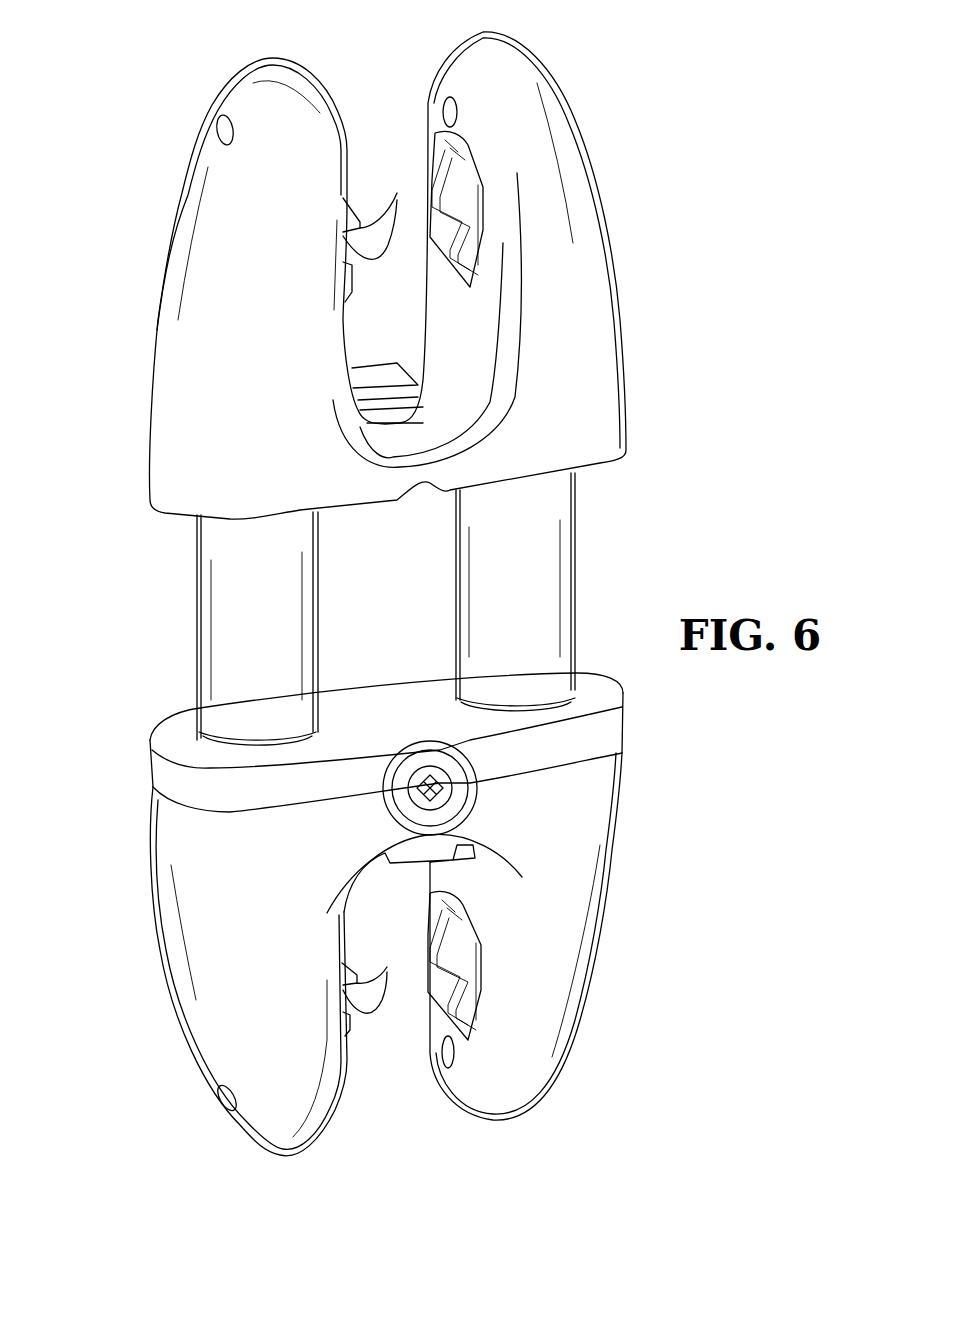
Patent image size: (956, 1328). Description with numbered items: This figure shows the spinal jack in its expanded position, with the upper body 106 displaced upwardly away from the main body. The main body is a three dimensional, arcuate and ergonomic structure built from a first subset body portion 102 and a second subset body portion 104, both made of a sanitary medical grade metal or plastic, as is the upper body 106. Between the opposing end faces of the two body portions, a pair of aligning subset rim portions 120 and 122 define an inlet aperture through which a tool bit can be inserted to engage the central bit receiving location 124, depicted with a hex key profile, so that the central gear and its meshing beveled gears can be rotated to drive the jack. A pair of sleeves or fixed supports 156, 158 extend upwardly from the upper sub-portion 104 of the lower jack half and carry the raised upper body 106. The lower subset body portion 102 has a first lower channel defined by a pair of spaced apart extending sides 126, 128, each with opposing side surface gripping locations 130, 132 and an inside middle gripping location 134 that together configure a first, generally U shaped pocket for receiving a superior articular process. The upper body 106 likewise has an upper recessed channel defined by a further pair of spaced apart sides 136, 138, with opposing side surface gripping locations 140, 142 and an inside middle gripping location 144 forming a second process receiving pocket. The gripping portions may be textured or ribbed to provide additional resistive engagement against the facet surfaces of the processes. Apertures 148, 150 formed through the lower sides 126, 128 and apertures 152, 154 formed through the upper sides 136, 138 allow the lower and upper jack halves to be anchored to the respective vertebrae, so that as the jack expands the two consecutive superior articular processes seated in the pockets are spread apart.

The first subset body portion 102 is at (183, 905).
The second subset body portion 104 is at (162, 775).
The upper body 106 is at (160, 440).
The subset rim portion 120 is at (452, 792).
The subset rim portion 122 is at (433, 787).
The central bit receiving location 124 is at (440, 787).
The extending side 126 is at (278, 1137).
The extending side 128 is at (537, 1087).
The side surface gripping location 130 is at (370, 1030).
The side surface gripping location 132 is at (440, 985).
The inside middle gripping location 134 is at (410, 855).
The spaced apart side 136 is at (205, 255).
The spaced apart side 138 is at (573, 202).
The side surface gripping location 140 is at (393, 262).
The side surface gripping location 142 is at (440, 237).
The inside middle gripping location 144 is at (368, 400).
The aperture 148 is at (225, 1105).
The aperture 150 is at (442, 1062).
The aperture 152 is at (220, 131).
The aperture 154 is at (447, 112).
The sleeve or fixed support 156 is at (222, 640).
The sleeve or fixed support 158 is at (547, 555).